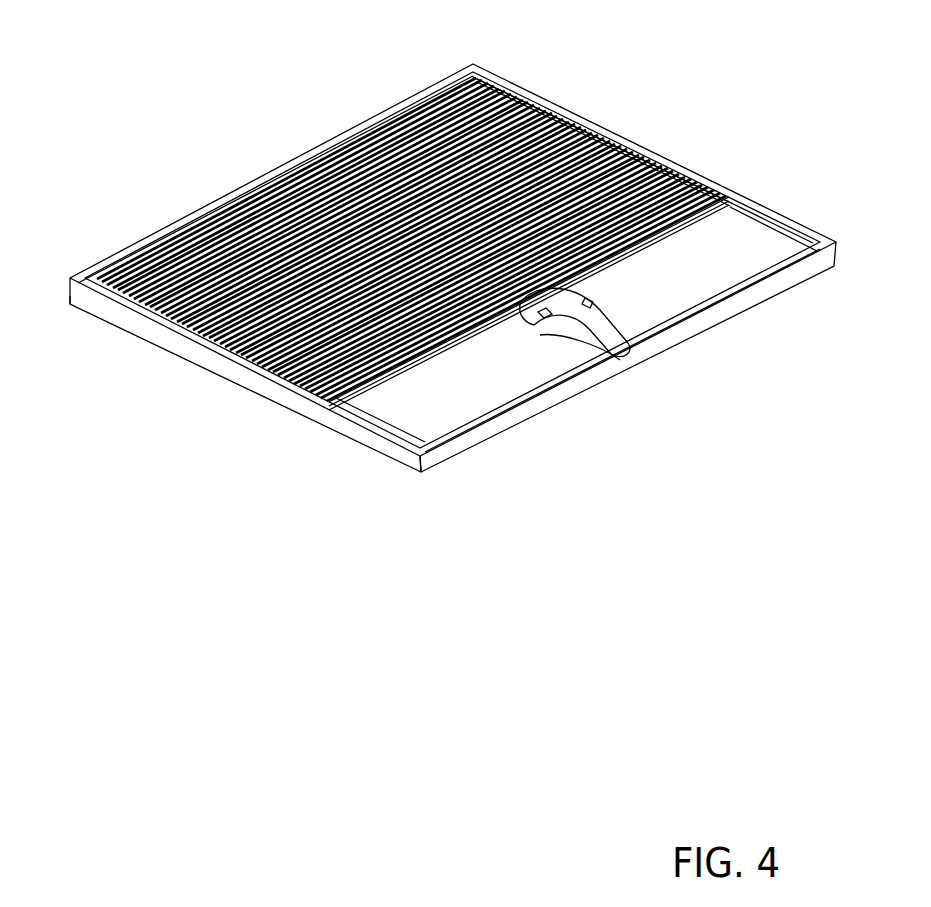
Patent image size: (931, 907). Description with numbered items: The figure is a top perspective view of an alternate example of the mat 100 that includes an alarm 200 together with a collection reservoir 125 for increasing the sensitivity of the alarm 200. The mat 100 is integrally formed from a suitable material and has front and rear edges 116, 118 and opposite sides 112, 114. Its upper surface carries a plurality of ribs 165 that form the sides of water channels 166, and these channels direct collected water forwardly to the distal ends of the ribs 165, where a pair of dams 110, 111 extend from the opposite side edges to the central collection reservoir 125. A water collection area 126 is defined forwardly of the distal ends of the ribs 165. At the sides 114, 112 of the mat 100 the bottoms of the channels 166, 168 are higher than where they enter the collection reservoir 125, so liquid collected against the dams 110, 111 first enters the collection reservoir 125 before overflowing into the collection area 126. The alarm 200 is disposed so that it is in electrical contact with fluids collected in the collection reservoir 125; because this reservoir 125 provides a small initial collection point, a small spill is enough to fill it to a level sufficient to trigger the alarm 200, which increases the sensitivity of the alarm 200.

The mat 100 is at (561, 70).
The front edge 116 is at (306, 150).
The side 112 is at (622, 132).
The ribs 165 is at (655, 168).
The water channels 166 is at (750, 177).
The dam 111 is at (758, 201).
The side 114 is at (232, 372).
The channel 168 is at (326, 406).
The dam 110 is at (343, 413).
The rear edge 118 is at (547, 411).
The water collection area 126 is at (580, 364).
The alarm 200 is at (640, 346).
The collection reservoir 125 is at (542, 318).